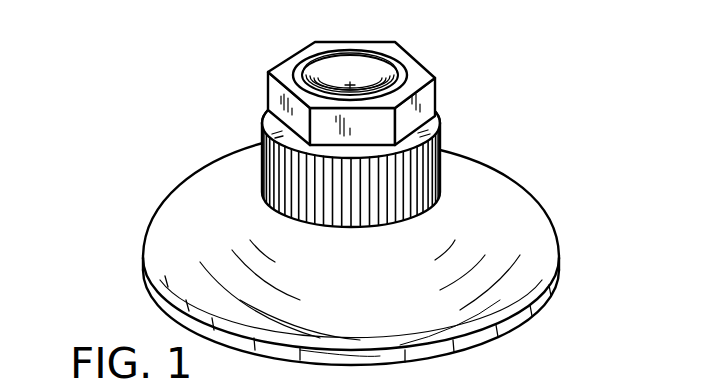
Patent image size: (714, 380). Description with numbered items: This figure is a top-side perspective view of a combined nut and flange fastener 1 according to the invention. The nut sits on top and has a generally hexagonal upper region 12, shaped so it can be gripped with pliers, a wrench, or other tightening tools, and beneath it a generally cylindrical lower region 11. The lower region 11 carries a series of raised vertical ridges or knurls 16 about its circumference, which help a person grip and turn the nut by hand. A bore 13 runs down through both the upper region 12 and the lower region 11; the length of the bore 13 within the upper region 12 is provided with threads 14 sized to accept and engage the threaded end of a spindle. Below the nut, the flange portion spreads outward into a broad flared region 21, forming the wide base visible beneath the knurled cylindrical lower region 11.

The combined nut and flange fastener 1 is at (212, 84).
The lower region 11 is at (443, 153).
The upper region 12 is at (425, 98).
The bore 13 is at (358, 82).
The threads 14 is at (312, 63).
The knurls 16 is at (303, 170).
The flared region 21 is at (180, 228).